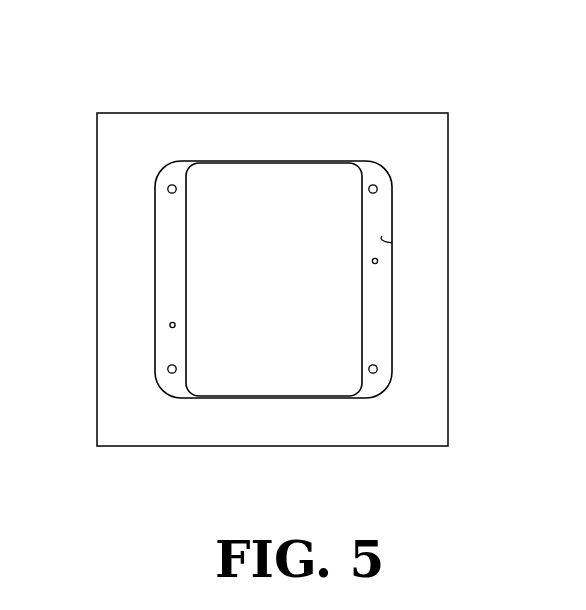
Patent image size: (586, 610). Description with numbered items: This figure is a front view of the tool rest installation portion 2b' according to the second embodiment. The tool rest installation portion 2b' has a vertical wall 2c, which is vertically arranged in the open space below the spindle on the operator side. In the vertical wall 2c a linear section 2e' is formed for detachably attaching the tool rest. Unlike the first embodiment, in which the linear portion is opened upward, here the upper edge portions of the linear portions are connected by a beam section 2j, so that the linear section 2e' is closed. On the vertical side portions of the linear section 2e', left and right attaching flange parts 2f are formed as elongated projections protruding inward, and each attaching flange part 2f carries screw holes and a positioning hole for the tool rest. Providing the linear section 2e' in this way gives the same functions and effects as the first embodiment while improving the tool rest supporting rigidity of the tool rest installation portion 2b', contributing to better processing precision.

The tool rest installation portion 2b' is at (285, 233).
The vertical wall 2c is at (284, 238).
The beam section 2j is at (275, 127).
The attaching flange parts 2f is at (280, 273).
The linear section 2e' is at (460, 237).